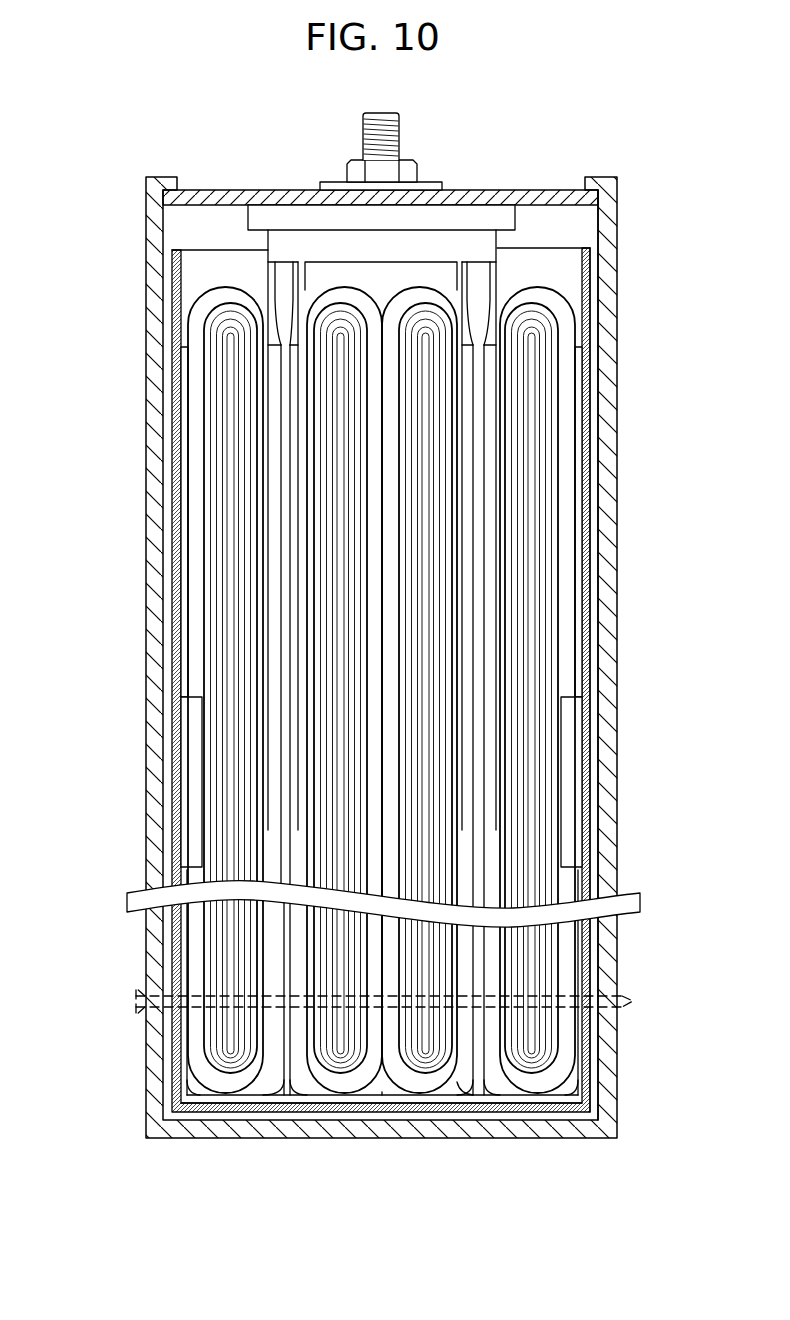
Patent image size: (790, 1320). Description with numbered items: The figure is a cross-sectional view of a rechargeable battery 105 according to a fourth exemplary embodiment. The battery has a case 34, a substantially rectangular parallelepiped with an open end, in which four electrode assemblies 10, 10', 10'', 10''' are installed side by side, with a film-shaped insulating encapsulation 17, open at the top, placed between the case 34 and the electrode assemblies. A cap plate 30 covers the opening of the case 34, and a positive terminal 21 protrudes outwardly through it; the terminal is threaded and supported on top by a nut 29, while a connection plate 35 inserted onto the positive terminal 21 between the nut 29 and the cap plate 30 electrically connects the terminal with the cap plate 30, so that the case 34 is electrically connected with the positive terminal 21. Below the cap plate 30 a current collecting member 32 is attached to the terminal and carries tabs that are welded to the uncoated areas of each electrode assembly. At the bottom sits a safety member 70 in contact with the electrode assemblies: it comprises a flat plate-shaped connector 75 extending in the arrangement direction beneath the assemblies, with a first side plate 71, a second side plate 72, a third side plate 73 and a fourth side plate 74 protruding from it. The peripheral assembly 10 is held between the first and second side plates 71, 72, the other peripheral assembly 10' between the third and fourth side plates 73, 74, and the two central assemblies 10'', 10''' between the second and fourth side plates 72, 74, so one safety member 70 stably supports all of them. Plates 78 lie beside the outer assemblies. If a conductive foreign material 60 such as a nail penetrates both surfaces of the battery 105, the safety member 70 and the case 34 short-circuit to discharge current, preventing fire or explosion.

The rechargeable battery 105 is at (192, 92).
The positive terminal 21 is at (363, 133).
The nut 29 is at (411, 163).
The connection plate 35 is at (435, 183).
The cap plate 30 is at (541, 191).
The current collecting member 32 is at (513, 245).
The electrode assembly 10 is at (587, 690).
The electrode assembly 10' is at (180, 690).
The electrode assembly 10'' is at (449, 617).
The electrode assembly 10''' is at (313, 616).
The case 34 is at (599, 401).
The insulating encapsulation 17 is at (591, 471).
The first side plate 71 is at (583, 566).
The spacer plate 78 is at (190, 780).
The conductive foreign material 60 is at (133, 996).
The third side plate 73 is at (185, 1079).
The safety member 70 is at (600, 1067).
The fourth side plate 74 is at (309, 1104).
The connector 75 is at (383, 1101).
The second side plate 72 is at (461, 1092).